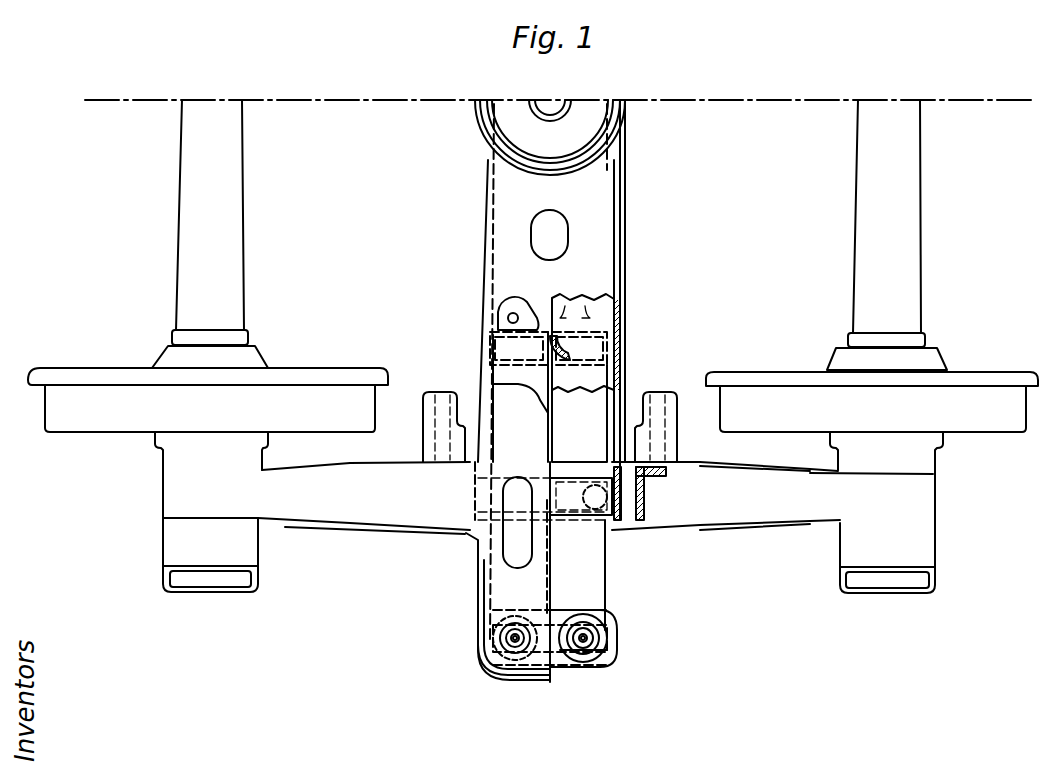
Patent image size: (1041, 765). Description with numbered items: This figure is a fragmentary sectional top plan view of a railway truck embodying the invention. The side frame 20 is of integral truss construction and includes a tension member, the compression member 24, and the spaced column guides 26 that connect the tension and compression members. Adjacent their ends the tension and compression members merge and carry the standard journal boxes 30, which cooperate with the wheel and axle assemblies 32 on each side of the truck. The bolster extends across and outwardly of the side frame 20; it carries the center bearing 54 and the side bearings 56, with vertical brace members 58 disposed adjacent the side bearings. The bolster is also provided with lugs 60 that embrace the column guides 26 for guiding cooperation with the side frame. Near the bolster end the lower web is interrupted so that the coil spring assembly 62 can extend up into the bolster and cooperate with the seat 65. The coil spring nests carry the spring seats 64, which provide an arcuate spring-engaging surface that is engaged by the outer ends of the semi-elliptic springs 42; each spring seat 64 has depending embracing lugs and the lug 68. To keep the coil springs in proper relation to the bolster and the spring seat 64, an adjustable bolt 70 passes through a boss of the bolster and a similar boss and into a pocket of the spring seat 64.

The side frame 20 is at (626, 522).
The compression member 24 is at (356, 524).
The column guides 26 is at (656, 480).
The journal boxes 30 is at (176, 537).
The wheel and axle assemblies 32 is at (104, 392).
The semi-elliptic springs 42 is at (497, 390).
The center bearing 54 is at (618, 116).
The side bearings 56 is at (600, 247).
The vertical brace members 58 is at (570, 353).
The lugs 60 is at (470, 535).
The coil spring assembly 62 is at (490, 629).
The spring seats 64 is at (560, 611).
The seat 65 is at (490, 668).
The lug 68 is at (614, 650).
The adjustable bolt 70 is at (580, 655).